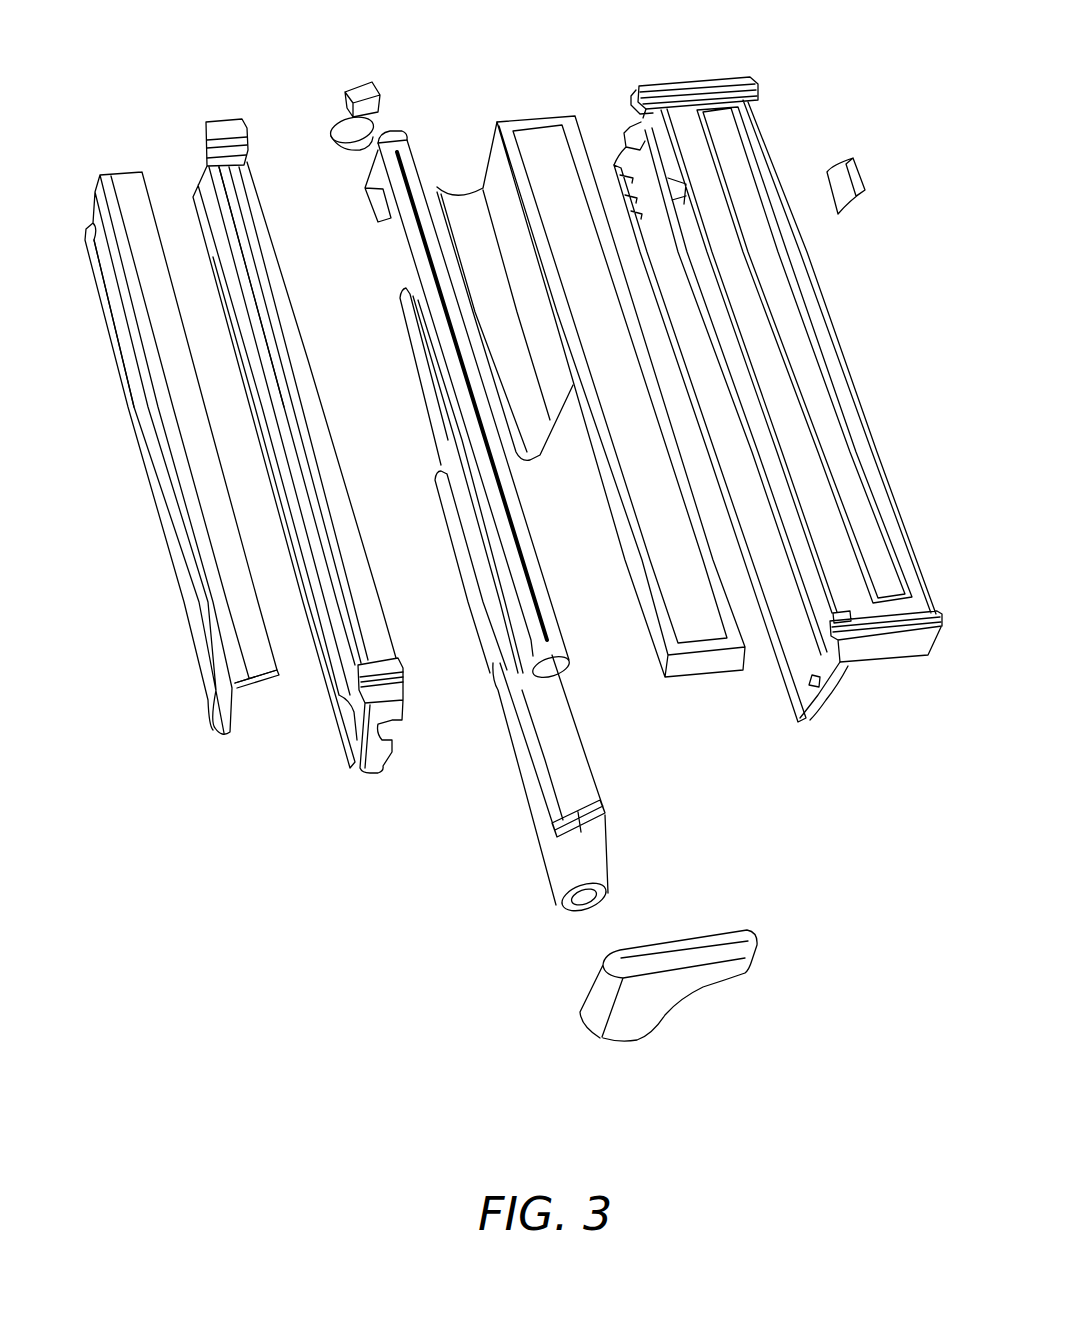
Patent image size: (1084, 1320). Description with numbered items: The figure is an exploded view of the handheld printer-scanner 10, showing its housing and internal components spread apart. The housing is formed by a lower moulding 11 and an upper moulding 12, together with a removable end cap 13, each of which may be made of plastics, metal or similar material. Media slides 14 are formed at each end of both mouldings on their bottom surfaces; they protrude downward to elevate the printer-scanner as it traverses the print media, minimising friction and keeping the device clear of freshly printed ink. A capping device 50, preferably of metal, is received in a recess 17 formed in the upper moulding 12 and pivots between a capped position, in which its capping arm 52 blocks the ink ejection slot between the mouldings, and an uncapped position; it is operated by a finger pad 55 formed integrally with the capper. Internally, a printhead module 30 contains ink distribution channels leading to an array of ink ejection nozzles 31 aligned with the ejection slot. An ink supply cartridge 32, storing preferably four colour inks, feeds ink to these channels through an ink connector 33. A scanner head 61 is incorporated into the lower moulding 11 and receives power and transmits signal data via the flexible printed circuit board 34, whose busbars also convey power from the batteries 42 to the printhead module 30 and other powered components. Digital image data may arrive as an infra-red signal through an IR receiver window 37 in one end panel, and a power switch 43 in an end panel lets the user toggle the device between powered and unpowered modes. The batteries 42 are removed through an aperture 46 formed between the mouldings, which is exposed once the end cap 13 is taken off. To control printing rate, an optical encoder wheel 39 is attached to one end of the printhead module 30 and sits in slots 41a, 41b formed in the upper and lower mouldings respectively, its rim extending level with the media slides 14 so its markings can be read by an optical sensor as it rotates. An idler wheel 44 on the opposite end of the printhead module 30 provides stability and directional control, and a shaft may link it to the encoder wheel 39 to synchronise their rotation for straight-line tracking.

The printer-scanner 10 is at (266, 890).
The lower moulding 11 is at (867, 658).
The upper moulding 12 is at (200, 180).
The removable end cap 13 is at (663, 988).
The media slides 14 is at (228, 120).
The recess 17 is at (322, 570).
The printhead module 30 is at (430, 310).
The ink ejection nozzles 31 is at (530, 577).
The ink supply cartridge 32 is at (577, 757).
The ink connector 33 is at (370, 200).
The flexible printed circuit board 34 is at (476, 202).
The IR receiver window 37 is at (340, 120).
The optical encoder wheel 39 is at (394, 128).
The slot 41a is at (252, 142).
The slot 41b is at (657, 83).
The batteries 42 is at (560, 867).
The power switch 43 is at (364, 88).
The idler wheel 44 is at (558, 667).
The aperture 46 is at (828, 707).
The capping device 50 is at (128, 178).
The capping arm 52 is at (262, 663).
The finger pad 55 is at (168, 540).
The scanner head 61 is at (553, 140).